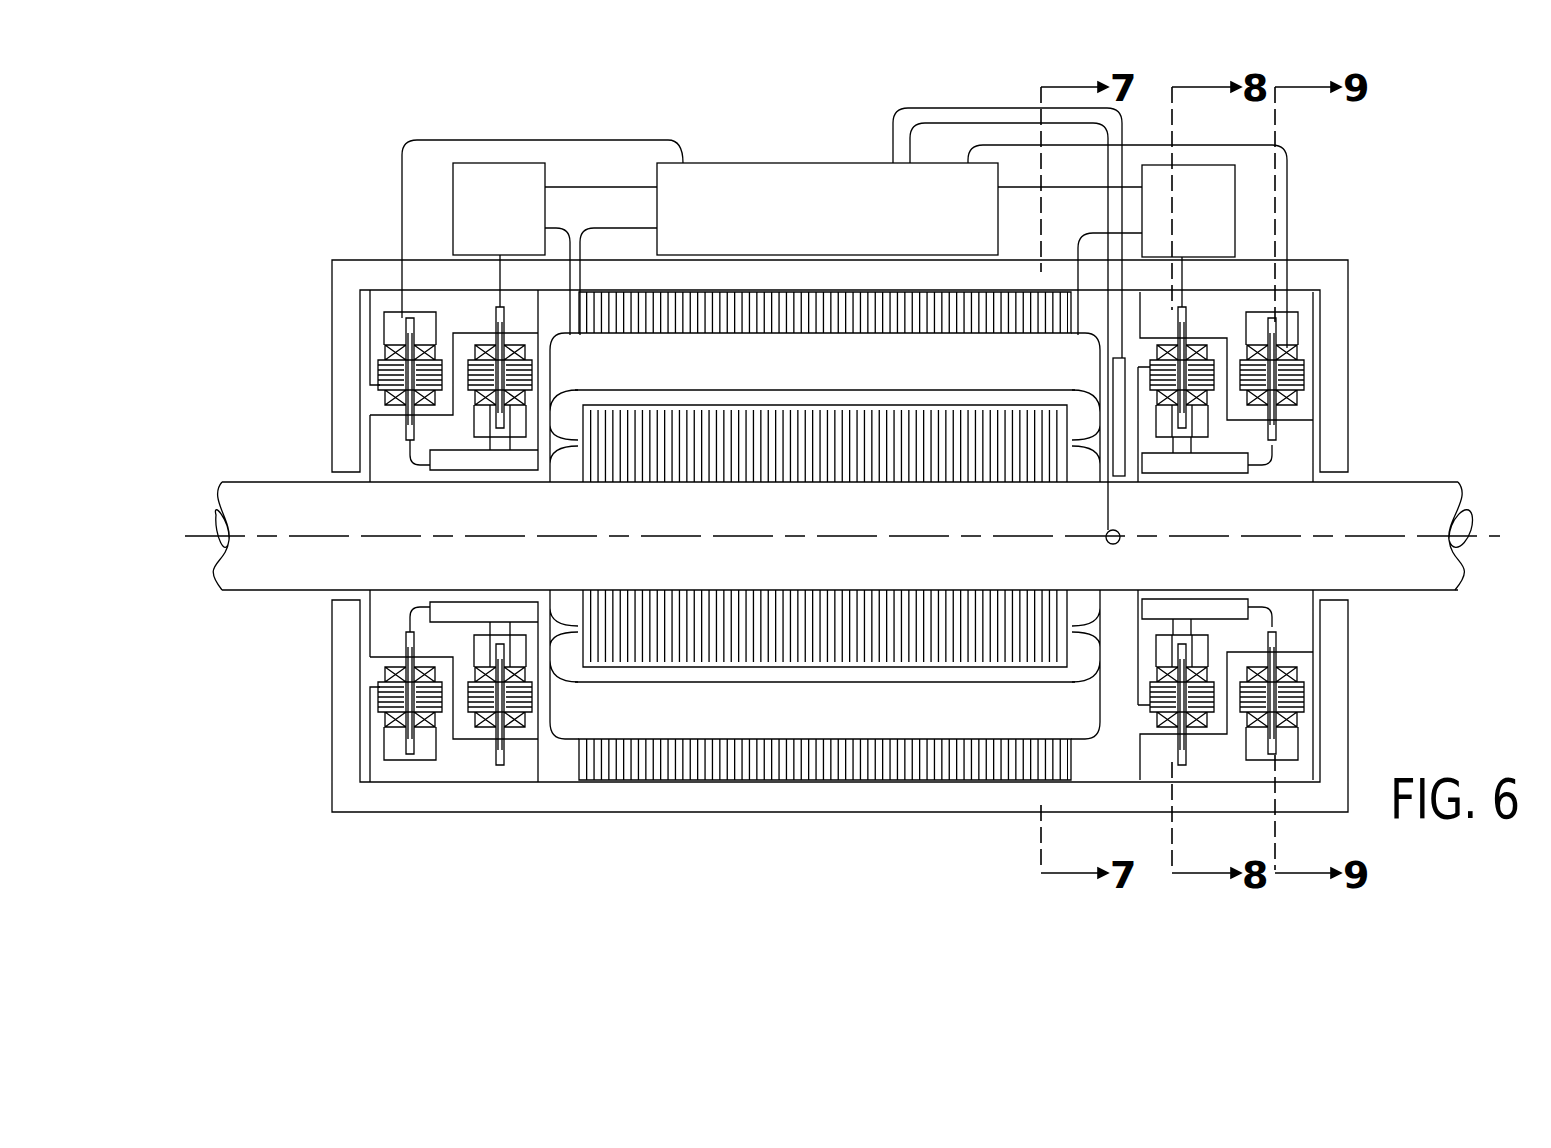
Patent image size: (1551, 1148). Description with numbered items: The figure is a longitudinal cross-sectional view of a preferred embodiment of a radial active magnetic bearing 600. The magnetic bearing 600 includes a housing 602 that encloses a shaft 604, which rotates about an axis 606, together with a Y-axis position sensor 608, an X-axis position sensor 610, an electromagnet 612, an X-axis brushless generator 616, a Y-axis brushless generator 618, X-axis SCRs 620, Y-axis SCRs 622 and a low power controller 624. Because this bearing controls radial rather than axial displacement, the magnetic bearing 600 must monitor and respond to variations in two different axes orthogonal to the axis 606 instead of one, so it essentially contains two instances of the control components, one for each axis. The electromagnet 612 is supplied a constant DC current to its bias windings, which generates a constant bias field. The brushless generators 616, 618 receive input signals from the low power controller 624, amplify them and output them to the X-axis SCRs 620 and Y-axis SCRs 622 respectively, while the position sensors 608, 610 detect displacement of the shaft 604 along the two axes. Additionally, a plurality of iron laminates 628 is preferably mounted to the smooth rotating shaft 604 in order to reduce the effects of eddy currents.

The magnetic bearing 600 is at (341, 236).
The housing 602 is at (1345, 262).
The shaft 604 is at (1383, 482).
The axis 606 is at (208, 533).
The Y-axis position sensor 608 is at (1121, 470).
The X-axis position sensor 610 is at (1114, 544).
The electromagnet 612 is at (557, 733).
The X-axis brushless generator 616 is at (560, 898).
The Y-axis brushless generator 618 is at (1300, 898).
The X-axis SCRs 620 is at (547, 172).
The Y-axis SCRs 622 is at (1218, 187).
The low power controller 624 is at (717, 163).
The iron laminates 628 is at (723, 417).